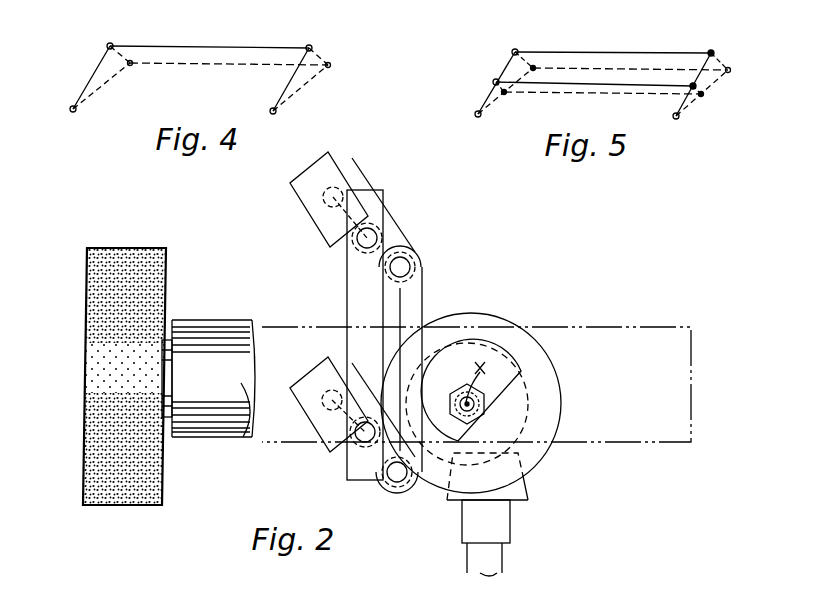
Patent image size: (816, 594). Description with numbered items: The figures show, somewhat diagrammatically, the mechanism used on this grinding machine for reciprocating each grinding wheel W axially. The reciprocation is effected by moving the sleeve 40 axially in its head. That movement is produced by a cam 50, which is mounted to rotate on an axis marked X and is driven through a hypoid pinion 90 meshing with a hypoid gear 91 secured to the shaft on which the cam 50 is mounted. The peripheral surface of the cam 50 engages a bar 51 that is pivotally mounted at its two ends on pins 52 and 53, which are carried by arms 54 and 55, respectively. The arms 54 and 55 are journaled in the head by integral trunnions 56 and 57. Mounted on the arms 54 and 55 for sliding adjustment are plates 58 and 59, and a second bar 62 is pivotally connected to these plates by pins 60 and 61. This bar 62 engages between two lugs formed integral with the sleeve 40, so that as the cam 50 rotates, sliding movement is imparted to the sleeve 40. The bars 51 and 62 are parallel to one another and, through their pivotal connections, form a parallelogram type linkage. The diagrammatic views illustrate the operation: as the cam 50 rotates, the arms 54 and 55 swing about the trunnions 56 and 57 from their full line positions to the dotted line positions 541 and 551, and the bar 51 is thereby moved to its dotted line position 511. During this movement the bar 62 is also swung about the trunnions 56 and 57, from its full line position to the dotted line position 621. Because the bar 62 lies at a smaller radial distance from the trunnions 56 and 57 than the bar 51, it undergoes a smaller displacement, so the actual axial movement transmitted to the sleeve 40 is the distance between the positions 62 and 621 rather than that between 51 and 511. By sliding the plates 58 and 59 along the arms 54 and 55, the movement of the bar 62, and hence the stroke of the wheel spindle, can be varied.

In FIG. 2, the sleeve 40 is at (226, 437).
In FIG. 2, the grinding wheel W is at (104, 507).
In FIG. 2, the cam 50 is at (505, 392).
In FIG. 4, the bar 51 is at (246, 47).
In FIG. 5, the bar 51 is at (617, 53).
In FIG. 2, the bar 51 is at (417, 307).
In FIG. 4, the dotted line position of bar 51 511 is at (250, 64).
In FIG. 5, the dotted line position of bar 51 511 is at (655, 69).
In FIG. 4, the pin 52 is at (107, 44).
In FIG. 5, the pin 52 is at (512, 50).
In FIG. 2, the pin 52 is at (404, 266).
In FIG. 4, the pin 53 is at (312, 47).
In FIG. 5, the pin 53 is at (714, 52).
In FIG. 2, the pin 53 is at (393, 478).
In FIG. 4, the arm 54 is at (95, 72).
In FIG. 5, the arm 54 is at (505, 83).
In FIG. 2, the arm 54 is at (398, 237).
In FIG. 4, the dotted line position of arm 54 541 is at (88, 97).
In FIG. 4, the arm 55 is at (296, 72).
In FIG. 5, the arm 55 is at (702, 84).
In FIG. 2, the arm 55 is at (278, 436).
In FIG. 4, the dotted line position of arm 55 551 is at (306, 88).
In FIG. 4, the trunnion 56 is at (70, 107).
In FIG. 5, the trunnion 56 is at (475, 113).
In FIG. 2, the trunnion 56 is at (325, 204).
In FIG. 4, the trunnion 57 is at (277, 111).
In FIG. 5, the trunnion 57 is at (680, 116).
In FIG. 2, the trunnion 57 is at (328, 395).
In FIG. 2, the plate 58 is at (362, 180).
In FIG. 2, the plate 59 is at (328, 441).
In FIG. 5, the pin 60 is at (493, 81).
In FIG. 2, the pin 60 is at (356, 247).
In FIG. 5, the pin 61 is at (697, 86).
In FIG. 2, the pin 61 is at (362, 438).
In FIG. 5, the bar 62 is at (604, 85).
In FIG. 2, the bar 62 is at (353, 296).
In FIG. 5, the dotted line position of bar 62 621 is at (642, 94).
In FIG. 2, the hypoid pinion 90 is at (518, 493).
In FIG. 2, the hypoid gear 91 is at (537, 453).